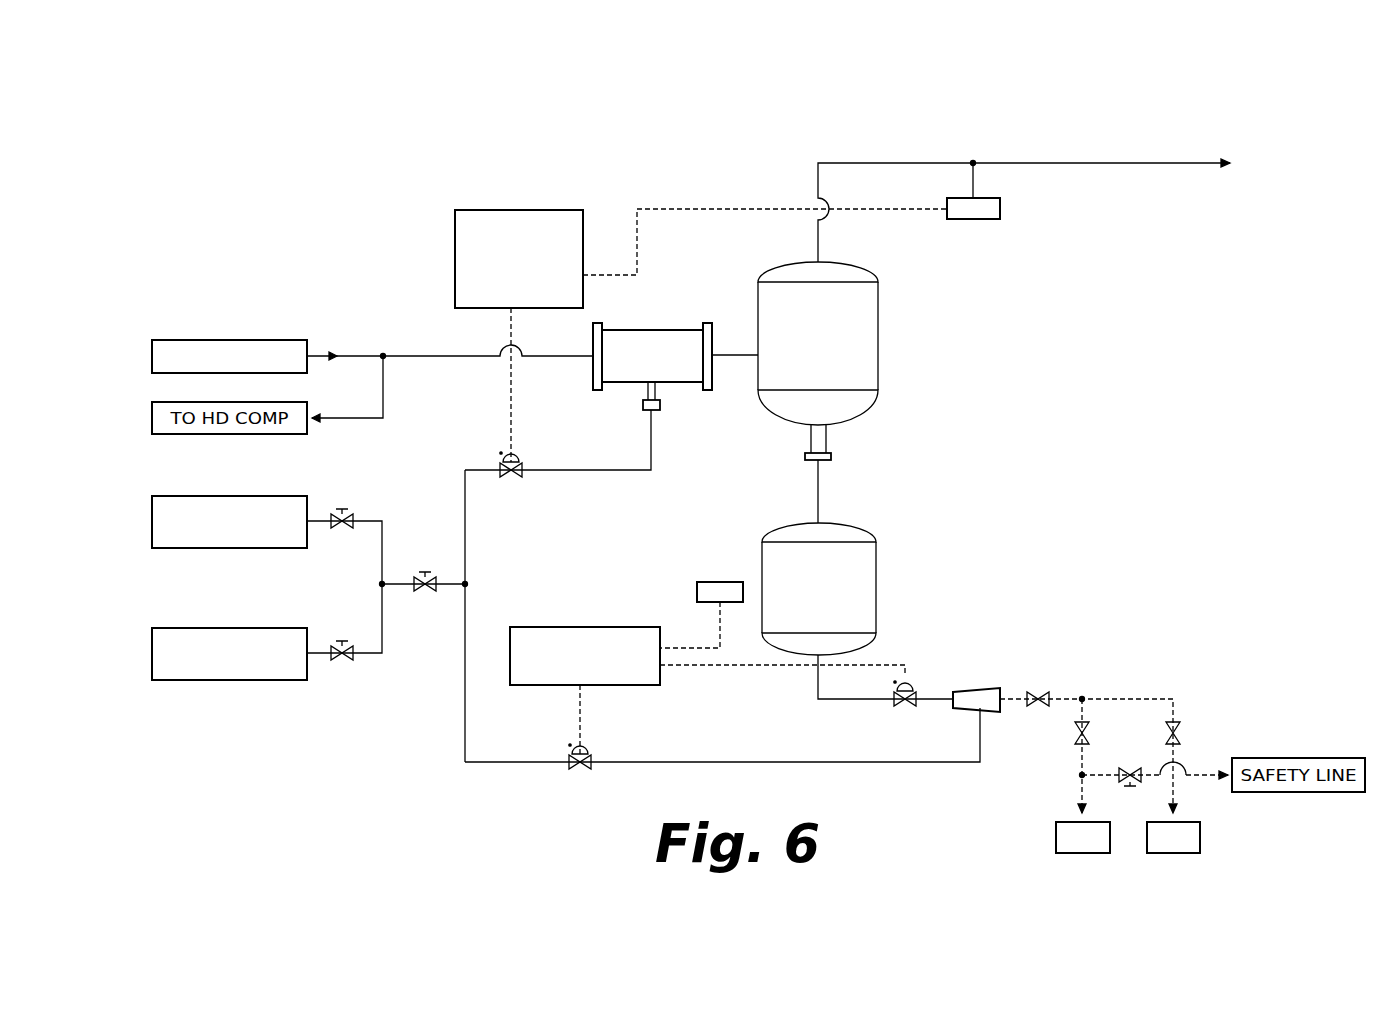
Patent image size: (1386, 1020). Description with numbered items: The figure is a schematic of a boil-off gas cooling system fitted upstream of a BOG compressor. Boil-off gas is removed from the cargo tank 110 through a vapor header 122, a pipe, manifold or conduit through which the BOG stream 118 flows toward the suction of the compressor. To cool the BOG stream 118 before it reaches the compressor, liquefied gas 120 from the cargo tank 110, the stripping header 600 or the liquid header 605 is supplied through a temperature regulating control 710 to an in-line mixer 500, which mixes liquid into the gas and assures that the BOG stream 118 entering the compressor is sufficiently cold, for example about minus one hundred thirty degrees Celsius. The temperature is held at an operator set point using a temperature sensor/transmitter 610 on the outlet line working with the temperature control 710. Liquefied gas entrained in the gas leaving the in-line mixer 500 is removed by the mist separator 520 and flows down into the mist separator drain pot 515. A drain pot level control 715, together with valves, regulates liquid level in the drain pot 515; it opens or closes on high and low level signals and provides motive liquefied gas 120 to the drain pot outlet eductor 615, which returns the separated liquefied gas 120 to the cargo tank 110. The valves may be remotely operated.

The cargo tank 110 is at (1056, 842).
The BOG stream 118 is at (418, 356).
The liquefied gas 120 is at (818, 688).
The vapor header 122 is at (250, 340).
The in-line mixer 500 is at (668, 330).
The mist separator drain pot 515 is at (876, 595).
The mist separator 520 is at (878, 342).
The stripping header 600 is at (288, 496).
The liquid header 605 is at (284, 680).
The temperature sensor/transmitter 610 is at (978, 219).
The outlet eductor 615 is at (975, 690).
The temperature regulating control 710 is at (504, 210).
The drain pot level control 715 is at (592, 627).